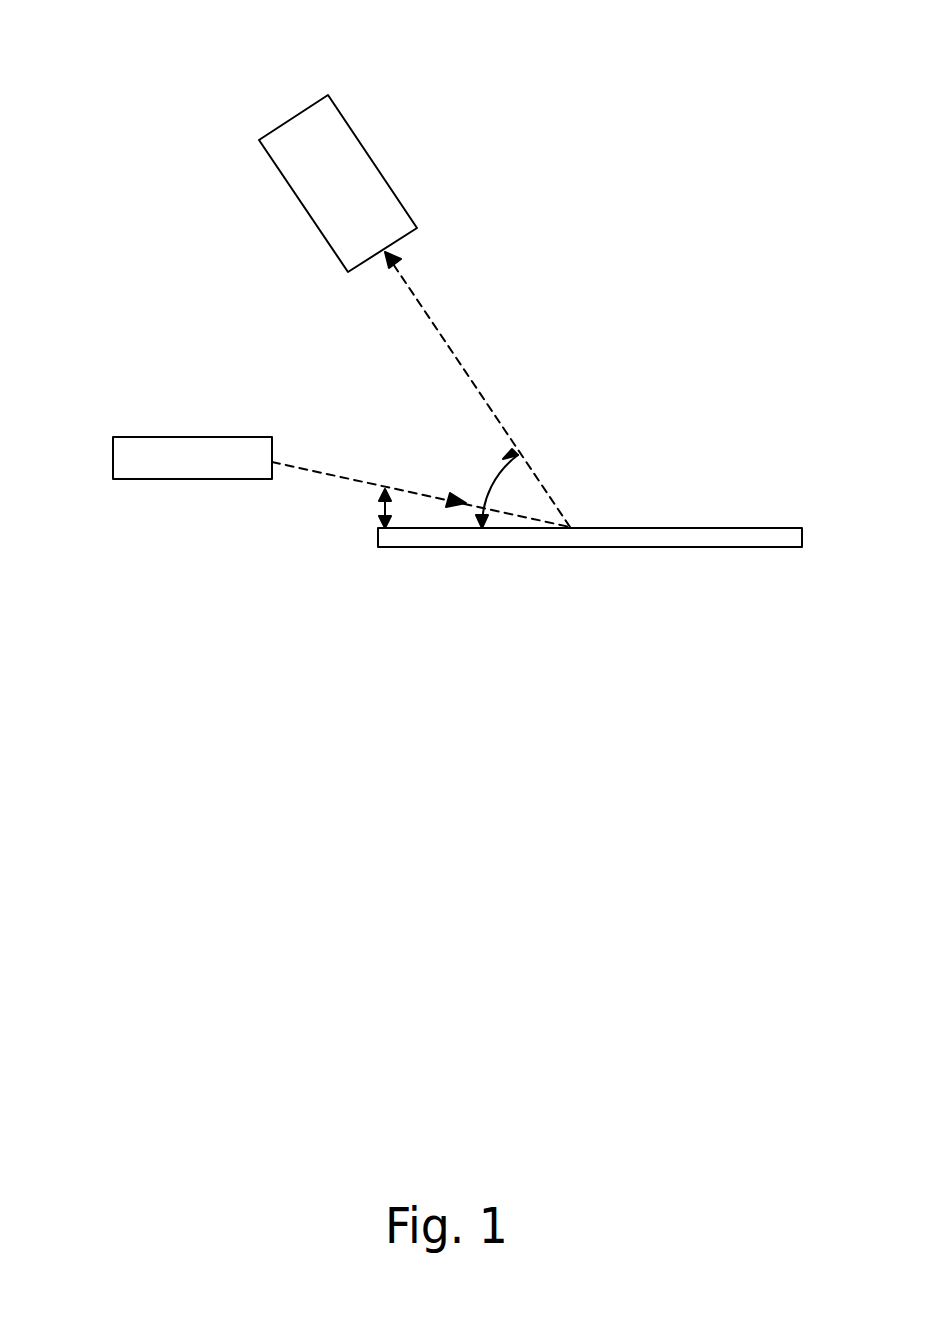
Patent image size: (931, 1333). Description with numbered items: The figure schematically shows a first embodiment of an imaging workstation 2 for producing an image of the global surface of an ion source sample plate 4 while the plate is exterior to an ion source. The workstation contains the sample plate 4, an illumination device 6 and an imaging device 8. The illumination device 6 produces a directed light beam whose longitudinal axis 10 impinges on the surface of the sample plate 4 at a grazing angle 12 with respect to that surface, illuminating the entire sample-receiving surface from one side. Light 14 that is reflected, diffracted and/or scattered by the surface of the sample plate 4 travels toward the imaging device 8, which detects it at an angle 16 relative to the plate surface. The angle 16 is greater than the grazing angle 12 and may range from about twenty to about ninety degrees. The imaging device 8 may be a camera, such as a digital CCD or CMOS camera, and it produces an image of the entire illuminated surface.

The imaging workstation 2 is at (137, 163).
The sample plate 4 is at (700, 532).
The illumination device 6 is at (193, 445).
The imaging device 8 is at (352, 142).
The light beam longitudinal axis 10 is at (300, 465).
The grazing angle 12 is at (380, 512).
The reflected light 14 is at (445, 322).
The detection angle 16 is at (497, 492).